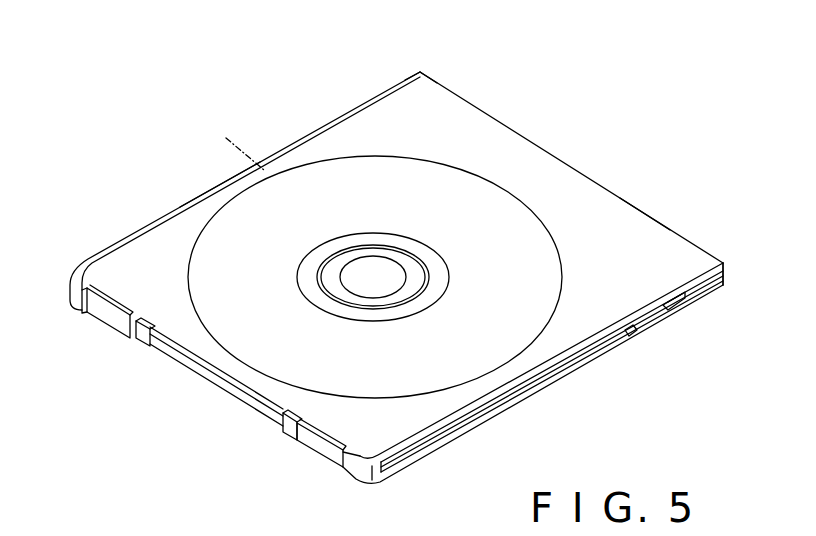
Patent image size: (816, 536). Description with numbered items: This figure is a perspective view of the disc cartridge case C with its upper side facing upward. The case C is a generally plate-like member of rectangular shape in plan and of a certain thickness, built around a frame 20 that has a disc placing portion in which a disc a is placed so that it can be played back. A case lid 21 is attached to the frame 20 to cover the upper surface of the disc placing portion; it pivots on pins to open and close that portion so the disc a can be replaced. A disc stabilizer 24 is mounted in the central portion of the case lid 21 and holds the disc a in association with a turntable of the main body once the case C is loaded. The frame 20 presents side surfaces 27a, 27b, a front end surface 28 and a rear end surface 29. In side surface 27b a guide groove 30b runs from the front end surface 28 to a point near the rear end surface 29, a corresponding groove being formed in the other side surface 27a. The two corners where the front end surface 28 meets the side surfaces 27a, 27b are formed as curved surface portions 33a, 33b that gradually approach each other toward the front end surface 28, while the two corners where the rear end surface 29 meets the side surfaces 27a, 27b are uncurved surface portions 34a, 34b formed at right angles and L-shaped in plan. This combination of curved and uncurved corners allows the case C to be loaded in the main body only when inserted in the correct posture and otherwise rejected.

The frame 20 is at (725, 287).
The case lid 21 is at (474, 130).
The disc stabilizer 24 is at (372, 262).
The side surface 27a is at (170, 200).
The side surface 27b is at (473, 415).
The front end surface 28 is at (243, 398).
The rear end surface 29 is at (643, 208).
The guide groove 30b is at (560, 376).
The curved surface portion 33a is at (70, 272).
The curved surface portion 33b is at (367, 480).
The uncurved surface portion 34a is at (421, 71).
The uncurved surface portion 34b is at (727, 263).
The disc cartridge case C is at (604, 180).
The disc a is at (236, 143).